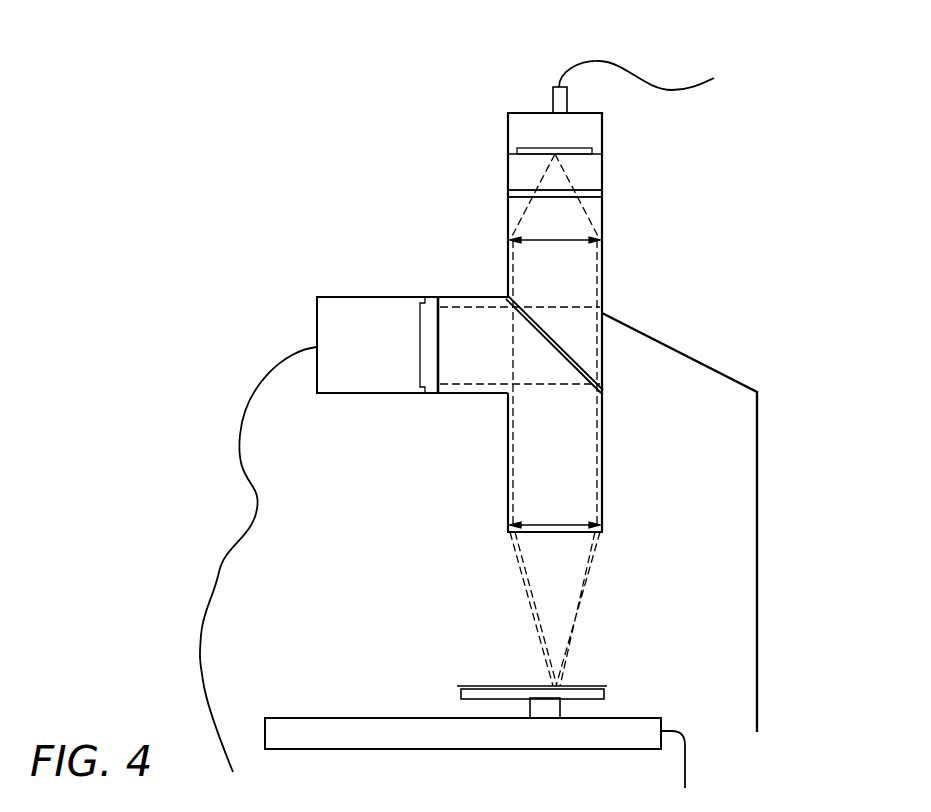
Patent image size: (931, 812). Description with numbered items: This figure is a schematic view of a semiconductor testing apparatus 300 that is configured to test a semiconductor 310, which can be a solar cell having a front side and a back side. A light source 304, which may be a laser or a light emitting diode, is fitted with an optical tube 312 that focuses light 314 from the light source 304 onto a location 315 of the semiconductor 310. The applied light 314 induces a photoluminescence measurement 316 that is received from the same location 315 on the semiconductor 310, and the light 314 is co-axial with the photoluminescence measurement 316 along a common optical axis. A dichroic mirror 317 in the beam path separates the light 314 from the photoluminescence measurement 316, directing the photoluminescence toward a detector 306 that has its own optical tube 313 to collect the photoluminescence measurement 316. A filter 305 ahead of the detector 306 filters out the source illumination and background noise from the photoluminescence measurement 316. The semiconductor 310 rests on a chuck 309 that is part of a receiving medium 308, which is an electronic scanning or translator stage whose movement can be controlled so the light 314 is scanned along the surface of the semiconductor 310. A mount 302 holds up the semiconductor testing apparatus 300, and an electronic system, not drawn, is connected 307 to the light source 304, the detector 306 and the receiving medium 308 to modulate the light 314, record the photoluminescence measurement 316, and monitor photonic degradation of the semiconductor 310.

The semiconductor testing apparatus 300 is at (668, 38).
The mount 302 is at (757, 527).
The light source 304 is at (377, 345).
The filter 305 is at (604, 192).
The detector 306 is at (554, 120).
The connection 307 is at (688, 90).
The receiving medium 308 is at (632, 727).
The chuck 309 is at (472, 693).
The semiconductor 310 is at (500, 687).
The optical tube 312 is at (474, 296).
The optical tube 313 is at (604, 302).
The light 314 is at (480, 386).
The location 315 is at (562, 665).
The photoluminescence measurement 316 is at (597, 268).
The dichroic mirror 317 is at (590, 351).